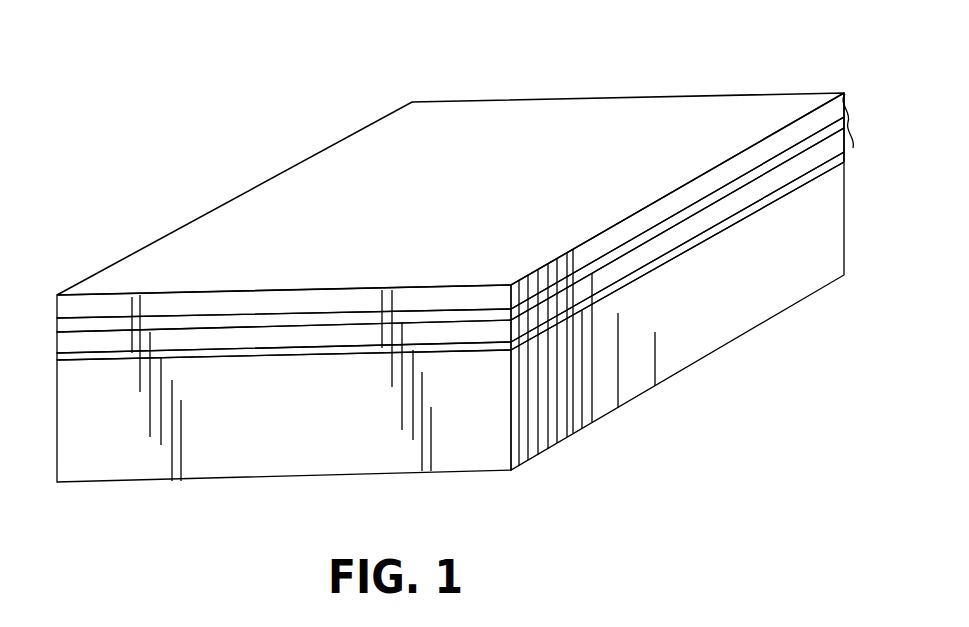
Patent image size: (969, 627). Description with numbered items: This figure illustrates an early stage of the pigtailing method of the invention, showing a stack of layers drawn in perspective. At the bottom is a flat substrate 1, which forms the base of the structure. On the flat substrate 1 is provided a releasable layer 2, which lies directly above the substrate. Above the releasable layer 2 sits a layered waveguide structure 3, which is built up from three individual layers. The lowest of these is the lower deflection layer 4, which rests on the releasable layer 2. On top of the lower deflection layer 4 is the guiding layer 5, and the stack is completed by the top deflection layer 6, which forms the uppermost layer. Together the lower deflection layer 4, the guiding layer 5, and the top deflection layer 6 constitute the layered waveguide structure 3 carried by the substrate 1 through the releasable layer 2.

The flat substrate 1 is at (133, 468).
The releasable layer 2 is at (82, 358).
The layered waveguide structure 3 is at (858, 118).
The lower deflection layer 4 is at (188, 342).
The guiding layer 5 is at (248, 323).
The top deflection layer 6 is at (303, 300).